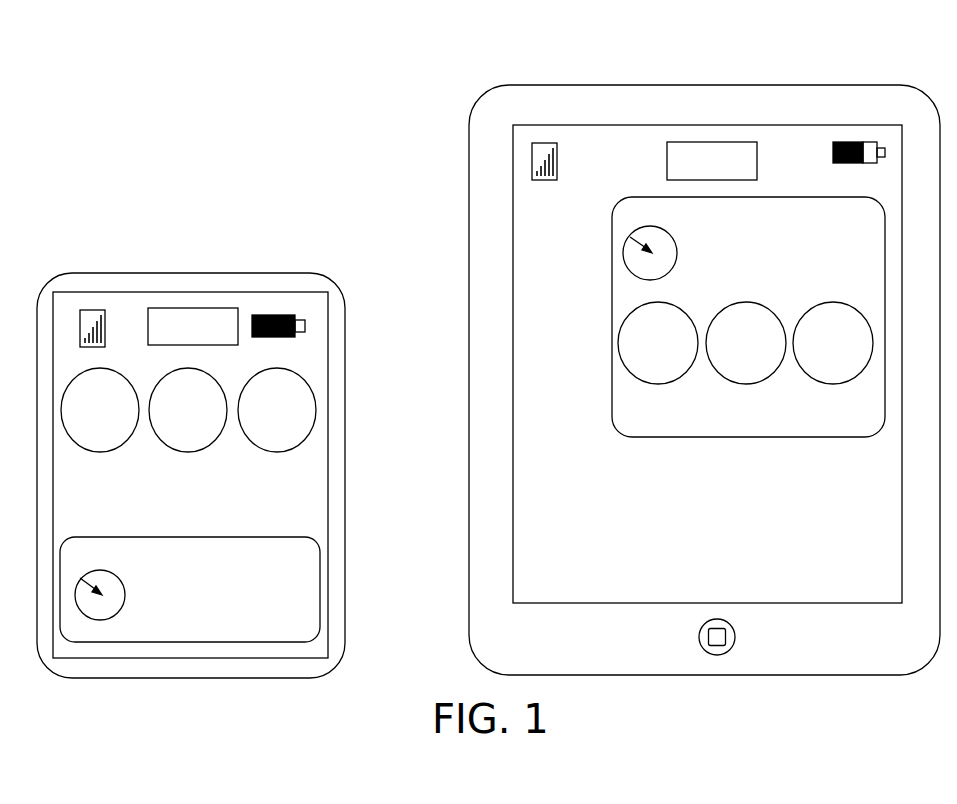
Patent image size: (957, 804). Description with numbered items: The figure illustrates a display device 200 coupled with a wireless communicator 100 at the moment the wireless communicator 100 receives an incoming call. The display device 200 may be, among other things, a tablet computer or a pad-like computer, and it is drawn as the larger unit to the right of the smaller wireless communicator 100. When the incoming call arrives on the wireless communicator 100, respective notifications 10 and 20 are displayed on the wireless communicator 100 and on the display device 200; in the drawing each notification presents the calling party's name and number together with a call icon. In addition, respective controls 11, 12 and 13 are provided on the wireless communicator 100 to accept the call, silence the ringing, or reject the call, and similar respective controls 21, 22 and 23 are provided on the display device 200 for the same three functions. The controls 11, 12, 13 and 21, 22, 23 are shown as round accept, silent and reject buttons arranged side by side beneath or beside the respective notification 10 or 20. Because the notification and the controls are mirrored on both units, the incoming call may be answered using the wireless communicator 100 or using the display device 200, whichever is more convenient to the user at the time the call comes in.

The wireless communicator 100 is at (123, 272).
The notification 10 is at (142, 537).
The control 11 is at (102, 452).
The control 12 is at (188, 452).
The control 13 is at (275, 452).
The display device 200 is at (708, 83).
The notification 20 is at (610, 342).
The control 21 is at (658, 384).
The control 22 is at (746, 384).
The control 23 is at (832, 384).